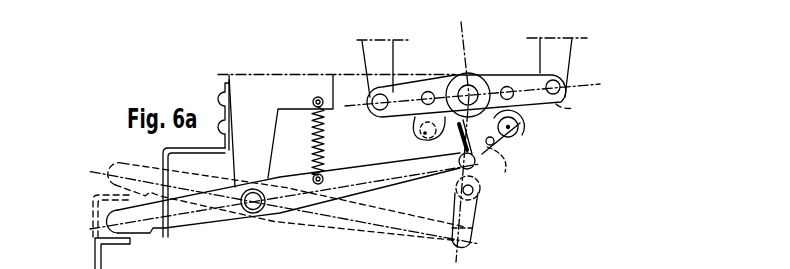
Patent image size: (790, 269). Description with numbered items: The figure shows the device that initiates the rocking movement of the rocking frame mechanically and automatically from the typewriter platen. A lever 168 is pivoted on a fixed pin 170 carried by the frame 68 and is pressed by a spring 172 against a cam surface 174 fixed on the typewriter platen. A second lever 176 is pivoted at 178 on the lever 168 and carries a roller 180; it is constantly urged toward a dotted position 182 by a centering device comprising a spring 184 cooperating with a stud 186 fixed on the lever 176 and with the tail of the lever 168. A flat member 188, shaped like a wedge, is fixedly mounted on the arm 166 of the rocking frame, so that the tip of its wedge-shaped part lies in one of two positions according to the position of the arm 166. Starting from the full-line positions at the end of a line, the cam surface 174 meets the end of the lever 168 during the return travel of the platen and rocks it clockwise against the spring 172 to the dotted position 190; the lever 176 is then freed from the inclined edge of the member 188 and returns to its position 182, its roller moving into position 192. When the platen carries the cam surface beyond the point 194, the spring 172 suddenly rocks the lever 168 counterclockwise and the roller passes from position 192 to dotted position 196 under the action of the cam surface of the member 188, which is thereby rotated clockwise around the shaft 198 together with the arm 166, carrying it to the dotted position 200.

The frame 68 is at (254, 82).
The arm 166 is at (385, 92).
The lever 168 is at (192, 223).
The fixed pin 170 is at (253, 209).
The spring 172 is at (313, 144).
The cam surface 174 is at (110, 238).
The second lever 176 is at (505, 150).
The pivot 178 is at (460, 163).
The roller 180 is at (520, 132).
The dotted position 182 is at (470, 222).
The spring 184 is at (495, 163).
The stud 186 is at (497, 139).
The flat member 188 is at (497, 77).
The dotted position 190 is at (392, 212).
The position 192 is at (480, 197).
The point 194 is at (370, 265).
The dotted position 196 is at (423, 137).
The shaft 198 is at (468, 92).
The dotted position 200 is at (563, 102).